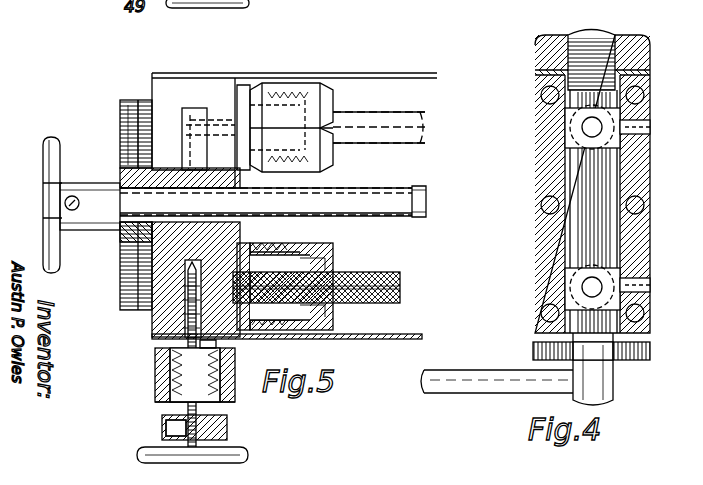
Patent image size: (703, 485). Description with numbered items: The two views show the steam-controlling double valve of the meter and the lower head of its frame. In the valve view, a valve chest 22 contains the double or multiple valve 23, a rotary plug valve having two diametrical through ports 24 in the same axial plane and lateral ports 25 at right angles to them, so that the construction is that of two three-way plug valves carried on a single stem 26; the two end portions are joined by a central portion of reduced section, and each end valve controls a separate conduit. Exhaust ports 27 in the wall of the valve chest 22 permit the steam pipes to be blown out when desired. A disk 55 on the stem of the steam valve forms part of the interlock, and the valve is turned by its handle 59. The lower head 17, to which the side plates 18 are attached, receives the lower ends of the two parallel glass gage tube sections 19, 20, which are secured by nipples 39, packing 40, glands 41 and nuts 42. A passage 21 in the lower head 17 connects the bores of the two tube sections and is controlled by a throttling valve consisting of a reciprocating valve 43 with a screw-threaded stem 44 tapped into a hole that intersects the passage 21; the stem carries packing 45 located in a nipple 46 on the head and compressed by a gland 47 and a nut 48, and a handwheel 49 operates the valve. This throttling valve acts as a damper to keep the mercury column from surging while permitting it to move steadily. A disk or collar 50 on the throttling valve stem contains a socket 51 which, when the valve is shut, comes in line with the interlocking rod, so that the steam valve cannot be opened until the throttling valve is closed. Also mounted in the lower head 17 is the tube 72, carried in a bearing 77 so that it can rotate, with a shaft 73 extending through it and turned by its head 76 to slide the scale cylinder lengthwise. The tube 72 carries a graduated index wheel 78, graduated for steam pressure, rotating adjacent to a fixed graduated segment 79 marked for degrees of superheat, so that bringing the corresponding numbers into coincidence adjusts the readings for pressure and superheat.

In FIG. 5, the lower head 17 is at (160, 90).
In FIG. 5, the side plates 18 is at (372, 73).
In FIG. 5, the gage tube section 19 is at (392, 272).
In FIG. 5, the gage tube section 20 is at (410, 145).
In FIG. 5, the passage 21 is at (152, 312).
In FIG. 4, the valve chest 22 is at (650, 214).
In FIG. 4, the double or multiple valve 23 is at (592, 182).
In FIG. 4, the through ports 24 is at (602, 125).
In FIG. 4, the lateral ports 25 is at (568, 128).
In FIG. 4, the stem 26 is at (600, 387).
In FIG. 4, the exhaust ports 27 is at (666, 298).
In FIG. 5, the nipples 39 is at (245, 250).
In FIG. 5, the packing 40 is at (288, 250).
In FIG. 5, the glands 41 is at (320, 258).
In FIG. 5, the nuts 42 is at (333, 262).
In FIG. 5, the reciprocating valve 43 is at (180, 300).
In FIG. 5, the screw-threaded stem 44 is at (183, 345).
In FIG. 5, the packing 45 is at (172, 370).
In FIG. 5, the nipple 46 is at (216, 347).
In FIG. 5, the gland 47 is at (228, 400).
In FIG. 5, the nut 48 is at (155, 398).
In FIG. 5, the handwheel 49 is at (137, 456).
In FIG. 5, the disk or collar 50 is at (228, 430).
In FIG. 5, the socket 51 is at (166, 430).
In FIG. 4, the disk 55 is at (652, 352).
In FIG. 4, the handle 59 is at (466, 372).
In FIG. 5, the tube 72 is at (355, 190).
In FIG. 5, the shaft 73 is at (427, 201).
In FIG. 5, the head 76 is at (44, 140).
In FIG. 5, the bearing 77 is at (240, 180).
In FIG. 5, the graduated index wheel 78 is at (120, 120).
In FIG. 5, the graduated segment 79 is at (142, 138).